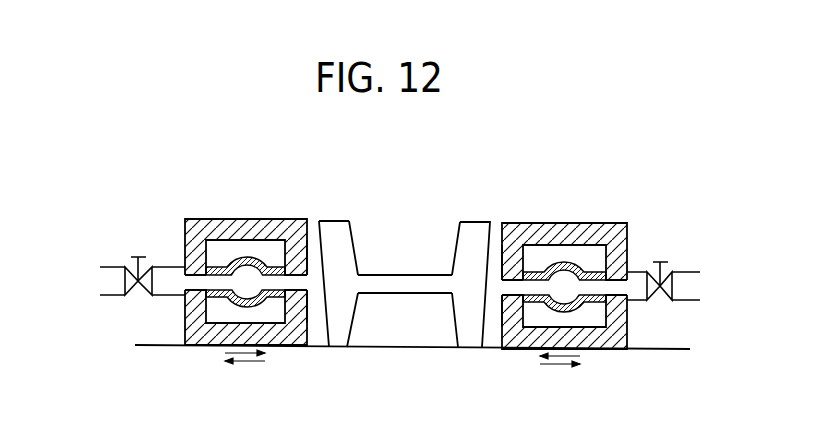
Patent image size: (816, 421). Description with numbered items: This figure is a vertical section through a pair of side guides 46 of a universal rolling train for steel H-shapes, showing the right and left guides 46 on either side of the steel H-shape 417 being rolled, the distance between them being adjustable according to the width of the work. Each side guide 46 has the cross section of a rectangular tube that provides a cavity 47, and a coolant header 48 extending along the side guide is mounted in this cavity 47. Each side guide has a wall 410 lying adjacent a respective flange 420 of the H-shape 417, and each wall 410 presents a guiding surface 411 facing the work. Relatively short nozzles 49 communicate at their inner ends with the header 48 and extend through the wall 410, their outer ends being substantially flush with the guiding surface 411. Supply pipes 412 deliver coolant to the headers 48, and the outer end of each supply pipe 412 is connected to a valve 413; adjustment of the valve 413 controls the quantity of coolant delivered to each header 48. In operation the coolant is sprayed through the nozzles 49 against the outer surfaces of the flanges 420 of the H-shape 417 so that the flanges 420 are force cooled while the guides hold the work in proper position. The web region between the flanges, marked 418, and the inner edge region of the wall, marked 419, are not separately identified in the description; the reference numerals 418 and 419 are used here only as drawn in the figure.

The side guide 46 is at (203, 218).
The cavity 47 is at (247, 247).
The coolant header 48 is at (267, 263).
The nozzle 49 is at (502, 284).
The wall 410 is at (330, 277).
The guiding surface 411 is at (308, 258).
The supply pipe 412 is at (163, 297).
The valve 413 is at (140, 257).
The H-shape 417 is at (356, 306).
The recess top 418 is at (420, 294).
The arm inner edge 419 is at (458, 248).
The flange 420 is at (458, 277).